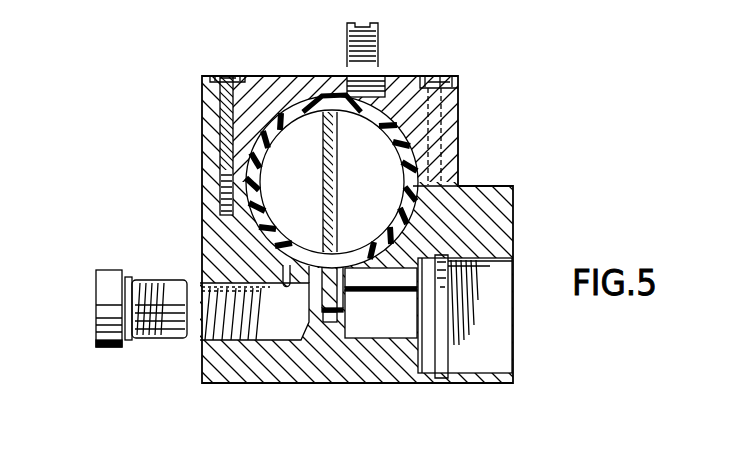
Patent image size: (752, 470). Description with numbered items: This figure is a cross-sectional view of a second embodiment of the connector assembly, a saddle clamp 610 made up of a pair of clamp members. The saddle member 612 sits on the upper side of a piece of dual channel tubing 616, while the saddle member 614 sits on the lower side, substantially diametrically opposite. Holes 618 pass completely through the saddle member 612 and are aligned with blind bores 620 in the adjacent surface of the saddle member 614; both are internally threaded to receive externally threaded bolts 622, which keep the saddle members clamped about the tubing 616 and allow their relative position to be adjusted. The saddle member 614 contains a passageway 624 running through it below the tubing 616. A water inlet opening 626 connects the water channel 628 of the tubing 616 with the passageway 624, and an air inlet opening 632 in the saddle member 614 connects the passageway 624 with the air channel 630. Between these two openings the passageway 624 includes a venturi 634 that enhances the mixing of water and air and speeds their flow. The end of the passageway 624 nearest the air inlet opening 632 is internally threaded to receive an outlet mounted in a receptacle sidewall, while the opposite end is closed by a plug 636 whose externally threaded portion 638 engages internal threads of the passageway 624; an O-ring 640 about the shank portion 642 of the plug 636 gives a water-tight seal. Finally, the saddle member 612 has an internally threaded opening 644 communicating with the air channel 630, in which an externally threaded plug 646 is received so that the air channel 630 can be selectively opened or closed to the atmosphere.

The saddle clamp 610 is at (464, 74).
The saddle member 612 is at (448, 150).
The saddle member 614 is at (300, 368).
The dual channel tubing 616 is at (299, 95).
The holes 618 is at (230, 120).
The blind bores 620 is at (230, 187).
The bolts 622 is at (228, 76).
The passageway 624 is at (277, 330).
The water inlet opening 626 is at (286, 268).
The water channel 628 is at (318, 108).
The air channel 630 is at (378, 84).
The air inlet opening 632 is at (392, 232).
The venturi 634 is at (334, 314).
The plug 636 is at (112, 347).
The externally threaded portion 638 is at (157, 338).
The O-ring 640 is at (130, 278).
The shank portion 642 is at (100, 308).
The internally threaded opening 644 is at (378, 125).
The externally threaded plug 646 is at (379, 30).